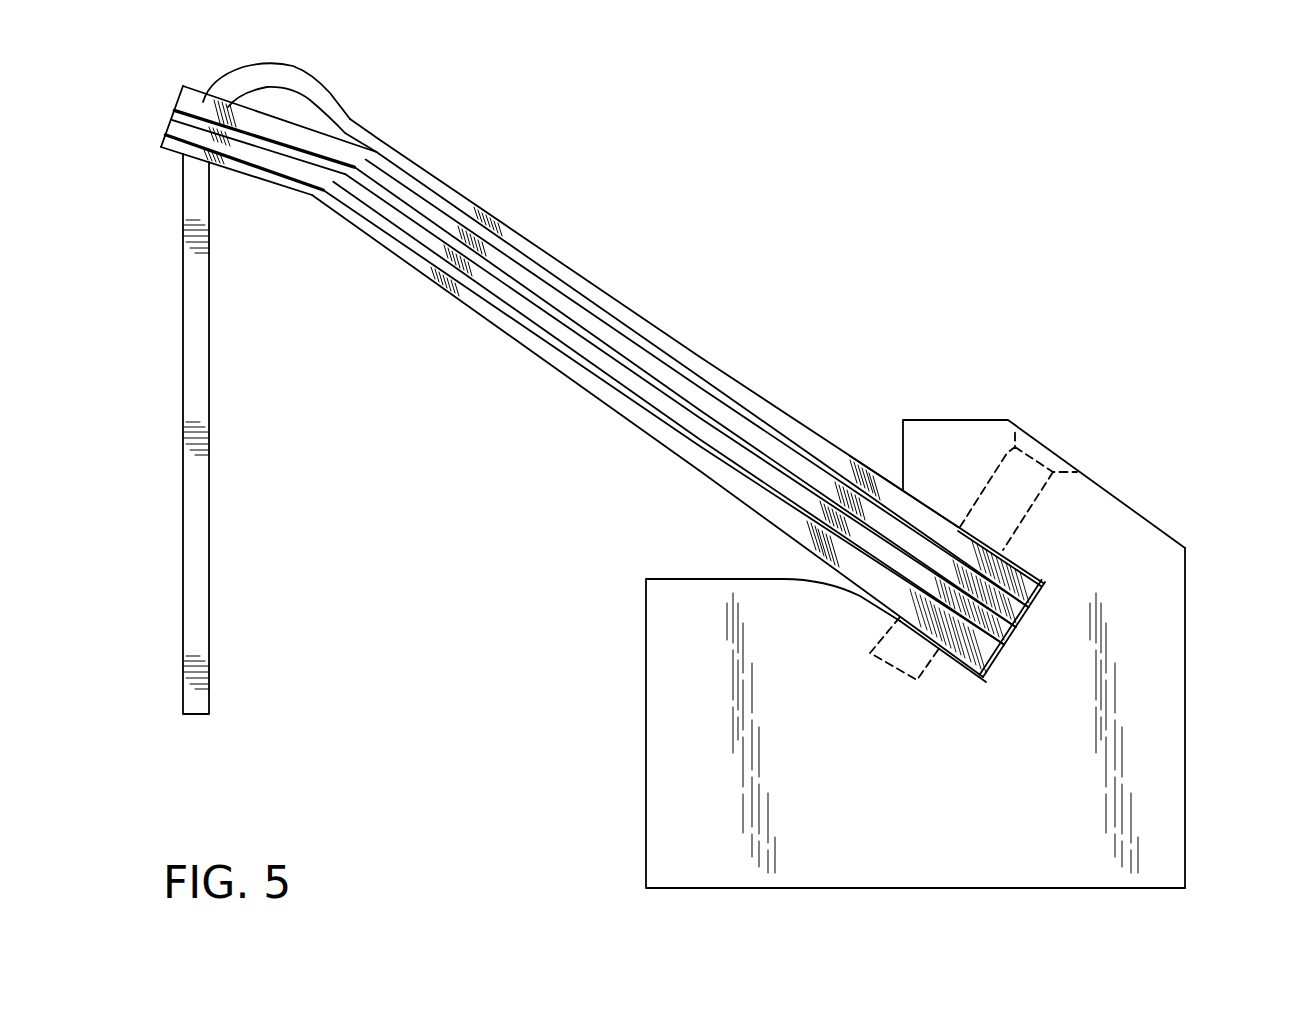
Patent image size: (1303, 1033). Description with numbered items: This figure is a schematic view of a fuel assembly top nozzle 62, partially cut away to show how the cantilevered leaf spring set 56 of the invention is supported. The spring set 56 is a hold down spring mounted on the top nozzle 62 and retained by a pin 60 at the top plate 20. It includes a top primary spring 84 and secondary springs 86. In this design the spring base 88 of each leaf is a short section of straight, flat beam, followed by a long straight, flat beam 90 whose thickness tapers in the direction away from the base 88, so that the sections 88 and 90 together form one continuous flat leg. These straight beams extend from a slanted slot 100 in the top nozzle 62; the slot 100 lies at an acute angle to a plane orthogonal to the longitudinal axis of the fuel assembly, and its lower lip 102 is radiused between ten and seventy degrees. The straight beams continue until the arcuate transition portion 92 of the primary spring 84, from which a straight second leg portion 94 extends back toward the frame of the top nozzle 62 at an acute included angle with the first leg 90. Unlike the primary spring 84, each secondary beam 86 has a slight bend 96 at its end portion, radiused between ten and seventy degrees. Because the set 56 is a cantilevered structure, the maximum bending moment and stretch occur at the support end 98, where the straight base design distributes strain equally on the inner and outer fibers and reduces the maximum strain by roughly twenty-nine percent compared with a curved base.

The top plate 20 is at (646, 727).
The hold down spring set 56 is at (634, 288).
The pin 60 is at (1048, 445).
The top nozzle 62 is at (1193, 627).
The primary spring 84 is at (452, 188).
The secondary spring 86 is at (610, 338).
The spring base 88 is at (890, 481).
The first flat leg 90 is at (716, 367).
The arcuate transition portion 92 is at (288, 66).
The second leg portion 94 is at (212, 512).
The bend 96 is at (289, 191).
The support end 98 is at (1048, 596).
The slanted slot 100 is at (1005, 645).
The lower lip 102 is at (828, 570).